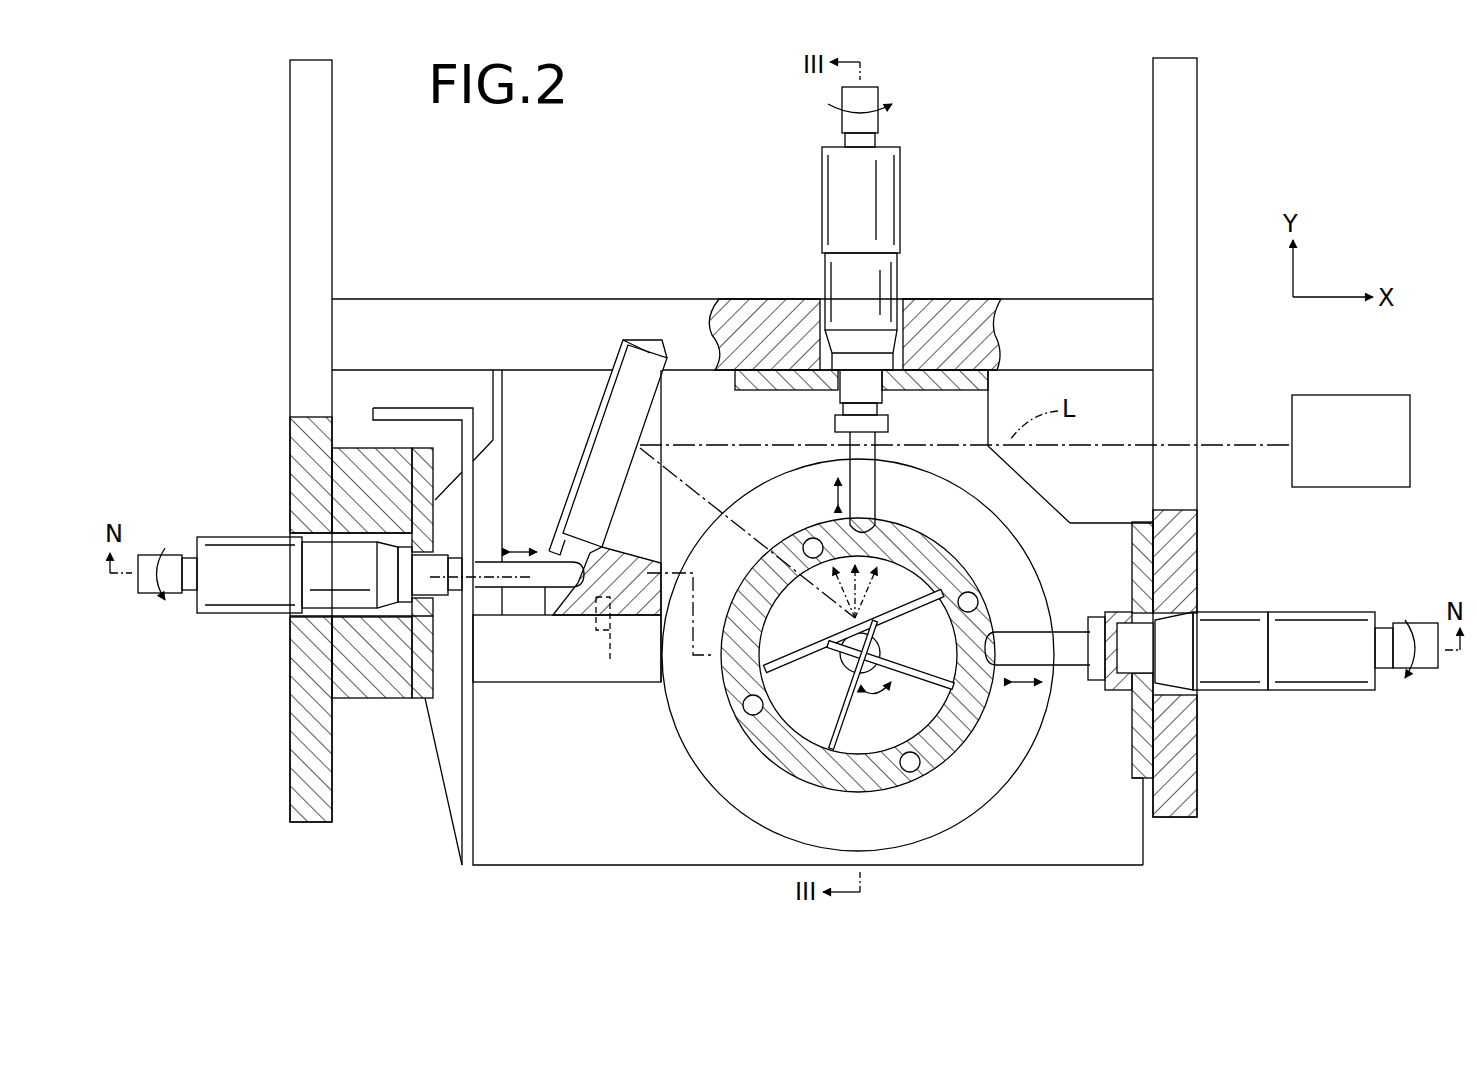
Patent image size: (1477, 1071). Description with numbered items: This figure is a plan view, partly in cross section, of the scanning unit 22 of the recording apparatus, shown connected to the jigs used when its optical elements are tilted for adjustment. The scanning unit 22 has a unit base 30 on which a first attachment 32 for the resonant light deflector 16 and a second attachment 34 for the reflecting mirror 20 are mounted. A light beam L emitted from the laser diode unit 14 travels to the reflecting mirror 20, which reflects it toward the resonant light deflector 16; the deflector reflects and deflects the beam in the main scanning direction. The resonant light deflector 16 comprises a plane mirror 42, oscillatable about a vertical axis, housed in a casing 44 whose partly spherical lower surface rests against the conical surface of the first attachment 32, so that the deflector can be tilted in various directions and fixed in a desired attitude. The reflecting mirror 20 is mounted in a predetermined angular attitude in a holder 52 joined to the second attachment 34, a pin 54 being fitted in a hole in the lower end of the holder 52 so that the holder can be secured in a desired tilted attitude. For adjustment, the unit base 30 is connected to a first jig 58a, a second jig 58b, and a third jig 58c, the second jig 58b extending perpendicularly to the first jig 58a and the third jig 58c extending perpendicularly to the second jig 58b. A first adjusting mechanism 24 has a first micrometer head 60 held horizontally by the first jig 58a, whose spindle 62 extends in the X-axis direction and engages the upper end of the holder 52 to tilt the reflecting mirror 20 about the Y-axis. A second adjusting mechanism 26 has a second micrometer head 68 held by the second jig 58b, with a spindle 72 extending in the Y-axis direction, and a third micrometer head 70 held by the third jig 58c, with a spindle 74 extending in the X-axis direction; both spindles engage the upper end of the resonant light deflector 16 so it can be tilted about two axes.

The laser diode unit 14 is at (1331, 392).
The resonant light deflector 16 is at (818, 685).
The reflecting mirror 20 is at (615, 430).
The scanning unit 22 is at (637, 838).
The first adjusting mechanism 24 is at (361, 576).
The second adjusting mechanism 26 is at (911, 310).
The unit base 30 is at (1211, 637).
The first attachment 32 is at (943, 822).
The second attachment 34 is at (533, 675).
The plane mirror 42 is at (912, 580).
The casing 44 is at (763, 738).
The holder 52 is at (620, 565).
The pin 54 is at (591, 636).
The first jig 58a is at (290, 318).
The second jig 58b is at (585, 310).
The third jig 58c is at (1150, 240).
The first micrometer head 60 is at (248, 552).
The spindle 62 is at (527, 578).
The second micrometer head 68 is at (863, 177).
The third micrometer head 70 is at (1316, 622).
The spindle 72 is at (870, 492).
The spindle 74 is at (1035, 640).